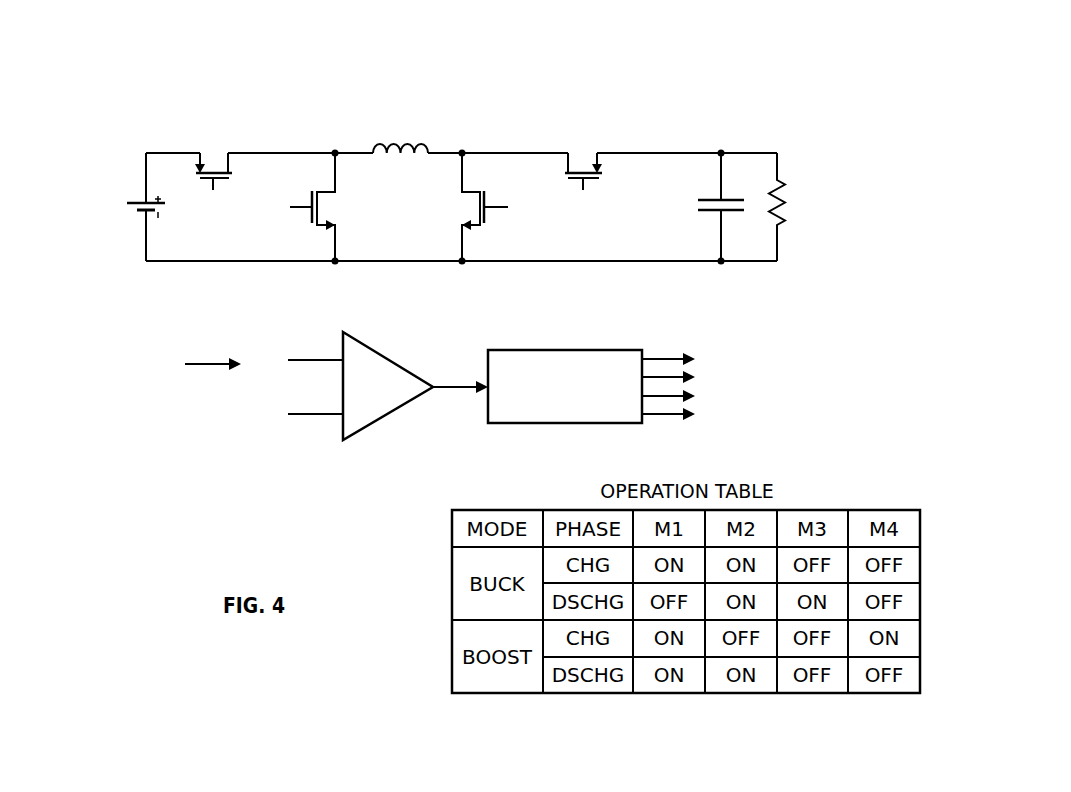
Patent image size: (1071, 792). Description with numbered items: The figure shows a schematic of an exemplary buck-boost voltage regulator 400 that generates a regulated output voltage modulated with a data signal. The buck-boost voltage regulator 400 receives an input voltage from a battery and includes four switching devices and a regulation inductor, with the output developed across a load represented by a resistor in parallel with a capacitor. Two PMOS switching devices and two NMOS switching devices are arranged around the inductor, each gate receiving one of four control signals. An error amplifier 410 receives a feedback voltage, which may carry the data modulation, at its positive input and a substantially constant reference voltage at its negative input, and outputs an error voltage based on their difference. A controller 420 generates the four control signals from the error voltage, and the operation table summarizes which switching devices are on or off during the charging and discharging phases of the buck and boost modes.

The buck-boost voltage regulator 400 is at (650, 58).
The error amplifier 410 is at (378, 350).
The controller 420 is at (562, 350).